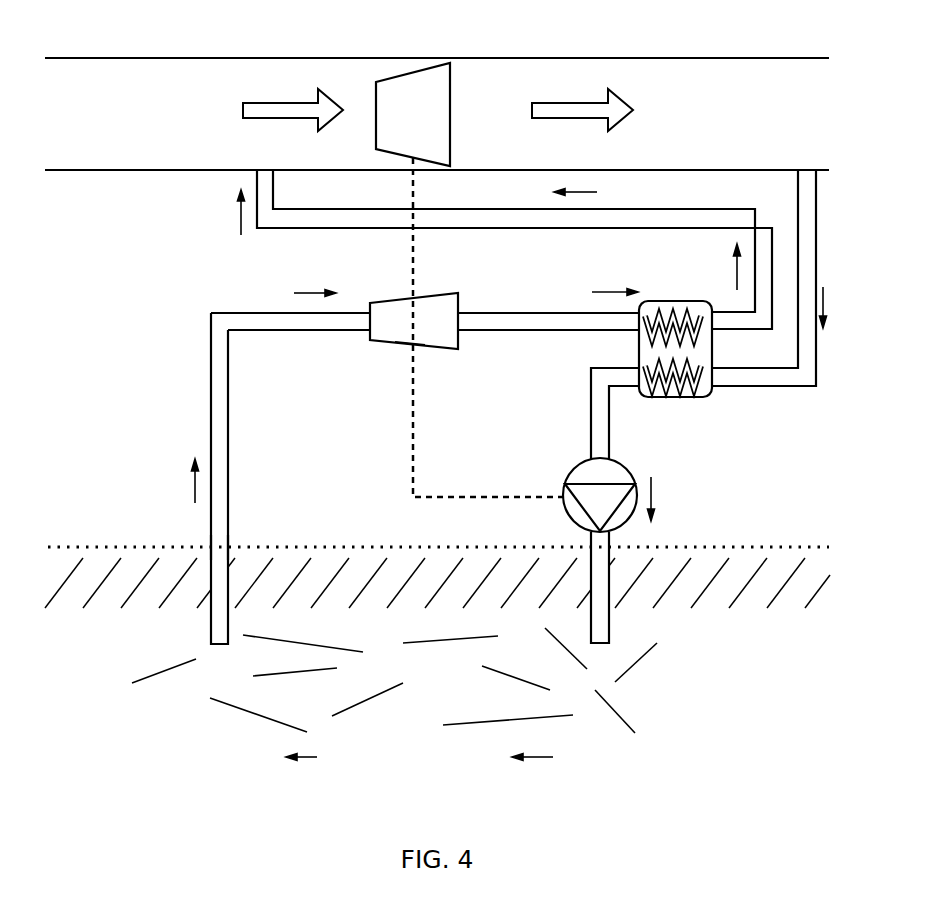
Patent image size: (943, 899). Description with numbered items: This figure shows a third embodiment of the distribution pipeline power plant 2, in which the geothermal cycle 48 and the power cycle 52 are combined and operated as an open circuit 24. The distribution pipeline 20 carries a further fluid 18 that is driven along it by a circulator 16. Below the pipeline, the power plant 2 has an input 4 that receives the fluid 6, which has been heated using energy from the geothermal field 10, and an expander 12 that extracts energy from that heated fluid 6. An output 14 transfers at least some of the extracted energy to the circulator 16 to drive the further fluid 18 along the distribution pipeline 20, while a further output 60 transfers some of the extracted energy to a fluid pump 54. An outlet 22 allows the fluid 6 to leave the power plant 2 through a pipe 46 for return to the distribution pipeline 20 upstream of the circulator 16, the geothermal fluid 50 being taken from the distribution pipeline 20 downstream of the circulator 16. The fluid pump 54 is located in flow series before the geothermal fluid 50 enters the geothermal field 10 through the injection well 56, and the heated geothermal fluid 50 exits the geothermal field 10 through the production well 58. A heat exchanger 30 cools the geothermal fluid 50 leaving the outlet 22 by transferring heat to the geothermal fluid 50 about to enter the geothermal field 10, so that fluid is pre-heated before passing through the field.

The distribution pipeline power plant 2 is at (95, 288).
The input 4 is at (345, 331).
The fluid 6 is at (211, 394).
The geothermal field 10 is at (393, 733).
The expander 12 is at (457, 350).
The output 14 is at (412, 264).
The circulator 16 is at (452, 115).
The further fluid 18 is at (243, 108).
The distribution pipeline 20 is at (592, 57).
The outlet 22 is at (473, 313).
The open circuit 24 is at (122, 464).
The heat exchanger 30 is at (694, 398).
The pipe 46 is at (522, 331).
The geothermal cycle 48 is at (168, 700).
The geothermal fluid 50 is at (633, 692).
The power cycle 52 is at (122, 352).
The fluid pump 54 is at (628, 469).
The injection well 56 is at (590, 546).
The production well 58 is at (230, 547).
The further output 60 is at (410, 345).